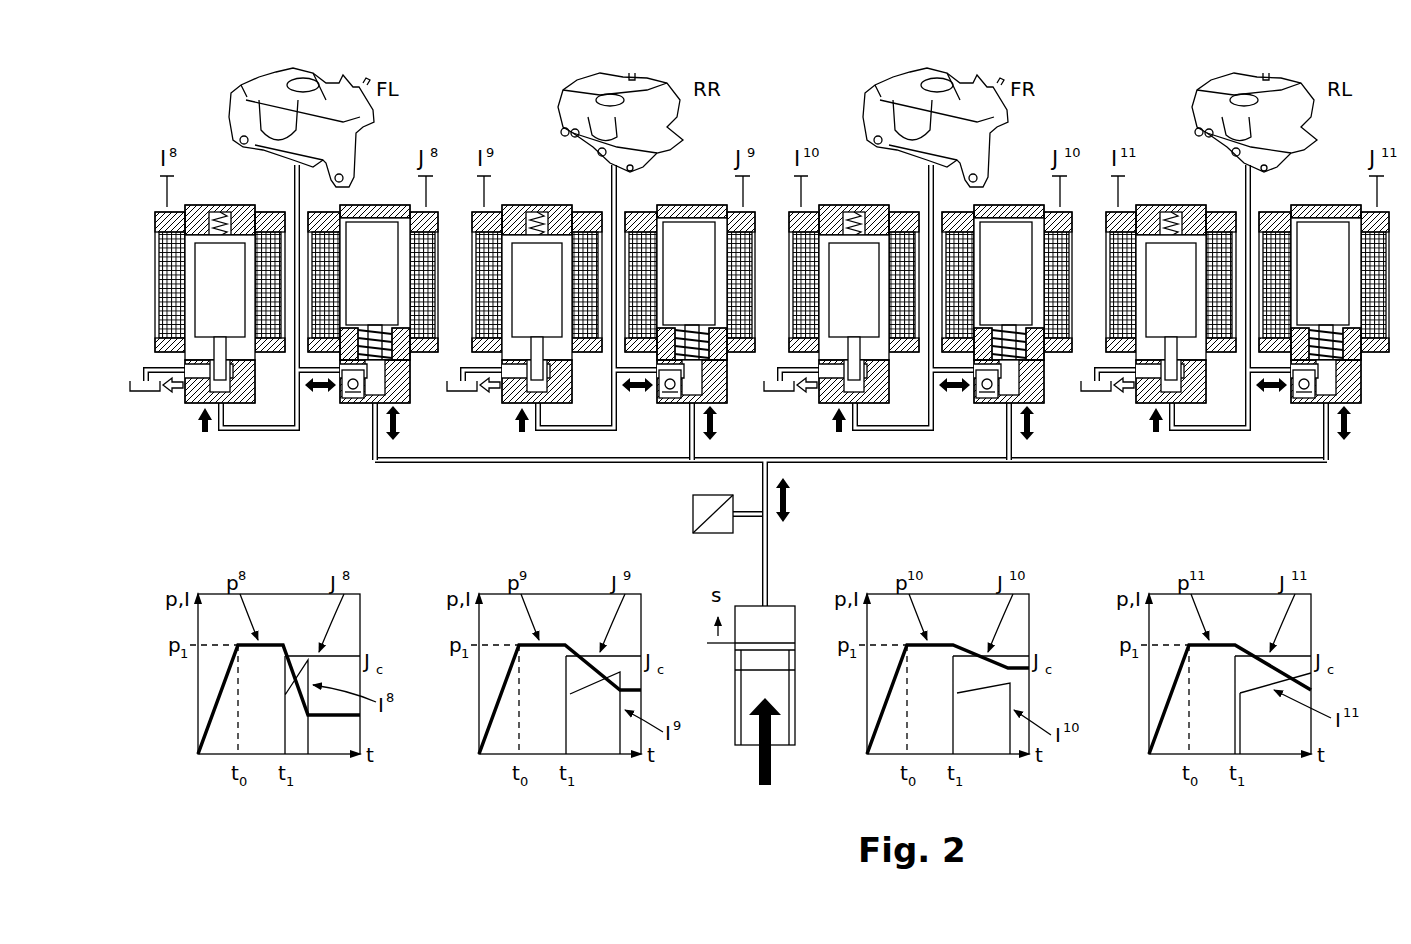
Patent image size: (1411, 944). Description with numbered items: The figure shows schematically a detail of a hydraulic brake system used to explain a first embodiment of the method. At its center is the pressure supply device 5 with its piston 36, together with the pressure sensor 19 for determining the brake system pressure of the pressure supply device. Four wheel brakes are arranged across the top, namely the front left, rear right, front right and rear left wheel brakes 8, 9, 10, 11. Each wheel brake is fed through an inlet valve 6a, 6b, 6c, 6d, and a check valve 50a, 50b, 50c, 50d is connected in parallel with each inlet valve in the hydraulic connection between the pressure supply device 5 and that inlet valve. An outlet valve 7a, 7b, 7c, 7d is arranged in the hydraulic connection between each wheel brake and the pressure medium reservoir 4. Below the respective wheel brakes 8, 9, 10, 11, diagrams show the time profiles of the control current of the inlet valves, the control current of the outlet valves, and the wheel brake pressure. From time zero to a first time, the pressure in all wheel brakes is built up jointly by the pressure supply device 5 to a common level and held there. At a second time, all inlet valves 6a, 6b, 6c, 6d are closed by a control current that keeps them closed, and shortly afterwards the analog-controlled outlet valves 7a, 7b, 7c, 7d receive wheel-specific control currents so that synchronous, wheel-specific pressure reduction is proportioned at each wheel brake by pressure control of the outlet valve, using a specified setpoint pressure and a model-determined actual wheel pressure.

The pressure medium reservoir 4 is at (153, 395).
The pressure supply device 5 is at (748, 760).
The inlet valve 6a is at (387, 207).
The inlet valve 6b is at (690, 275).
The inlet valve 6c is at (1007, 275).
The inlet valve 6d is at (1324, 275).
The outlet valve 7a is at (197, 207).
The outlet valve 7b is at (537, 275).
The outlet valve 7c is at (854, 275).
The outlet valve 7d is at (1171, 275).
The wheel brake 8 is at (268, 82).
The wheel brake 9 is at (603, 114).
The wheel brake 10 is at (922, 122).
The wheel brake 11 is at (1235, 114).
The pressure sensor 19 is at (690, 515).
The piston 36 is at (755, 691).
The check valve 50a is at (341, 395).
The check valve 50b is at (648, 415).
The check valve 50c is at (965, 415).
The check valve 50d is at (1282, 415).